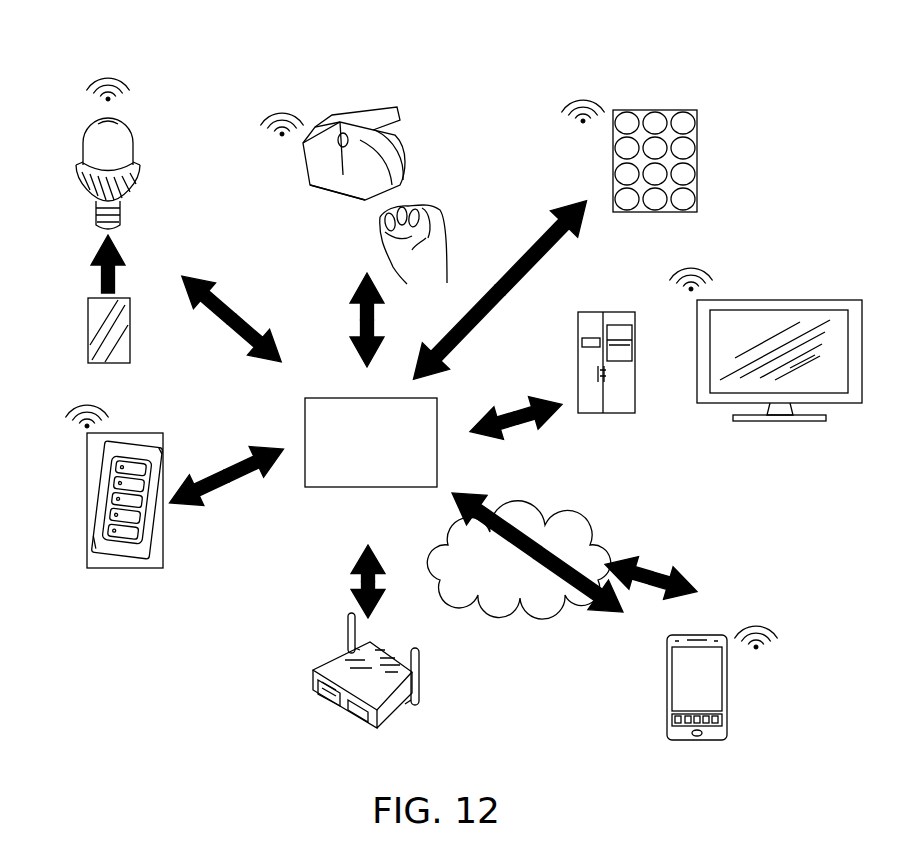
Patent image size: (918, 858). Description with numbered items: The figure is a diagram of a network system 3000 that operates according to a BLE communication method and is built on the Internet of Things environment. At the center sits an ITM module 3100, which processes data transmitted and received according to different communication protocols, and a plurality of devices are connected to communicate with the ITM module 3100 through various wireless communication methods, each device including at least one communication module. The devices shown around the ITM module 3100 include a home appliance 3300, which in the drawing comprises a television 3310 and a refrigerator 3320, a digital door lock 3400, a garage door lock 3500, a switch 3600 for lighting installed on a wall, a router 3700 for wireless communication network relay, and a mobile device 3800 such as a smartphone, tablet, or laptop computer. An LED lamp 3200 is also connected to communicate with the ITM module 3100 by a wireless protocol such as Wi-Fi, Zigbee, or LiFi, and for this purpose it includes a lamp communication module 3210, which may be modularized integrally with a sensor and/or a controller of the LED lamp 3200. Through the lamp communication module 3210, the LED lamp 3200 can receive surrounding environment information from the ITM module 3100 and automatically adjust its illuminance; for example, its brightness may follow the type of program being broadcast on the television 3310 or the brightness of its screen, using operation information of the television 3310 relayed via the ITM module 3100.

The network system 3000 is at (745, 92).
The ITM module 3100 is at (333, 490).
The LED lamp 3200 is at (128, 147).
The lamp communication module 3210 is at (88, 330).
The home appliance 3300 is at (745, 478).
The television 3310 is at (730, 405).
The refrigerator 3320 is at (628, 416).
The digital door lock 3400 is at (652, 108).
The garage door lock 3500 is at (340, 118).
The switch 3600 is at (125, 572).
The router 3700 is at (333, 703).
The mobile device 3800 is at (718, 694).